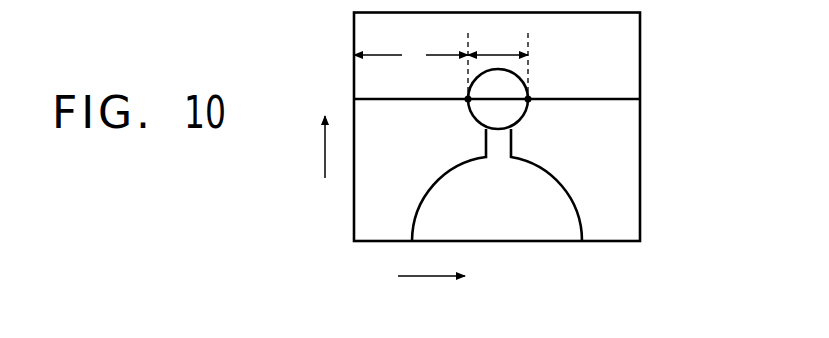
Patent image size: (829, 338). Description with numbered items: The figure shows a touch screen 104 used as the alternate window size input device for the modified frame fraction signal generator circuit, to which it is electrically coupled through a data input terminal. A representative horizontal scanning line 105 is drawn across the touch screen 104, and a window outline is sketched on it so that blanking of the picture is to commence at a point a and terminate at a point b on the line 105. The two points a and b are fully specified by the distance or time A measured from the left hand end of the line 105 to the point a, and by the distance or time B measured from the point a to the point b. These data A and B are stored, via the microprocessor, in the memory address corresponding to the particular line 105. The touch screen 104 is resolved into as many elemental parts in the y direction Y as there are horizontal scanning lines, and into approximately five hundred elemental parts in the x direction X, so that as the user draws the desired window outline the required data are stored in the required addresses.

The touch screen 104 is at (642, 150).
The horizontal scanning line 105 is at (618, 98).
The point a is at (468, 99).
The point b is at (528, 99).
The distance or time A is at (411, 66).
The distance or time B is at (498, 62).
The x direction X is at (442, 277).
The y direction Y is at (323, 133).